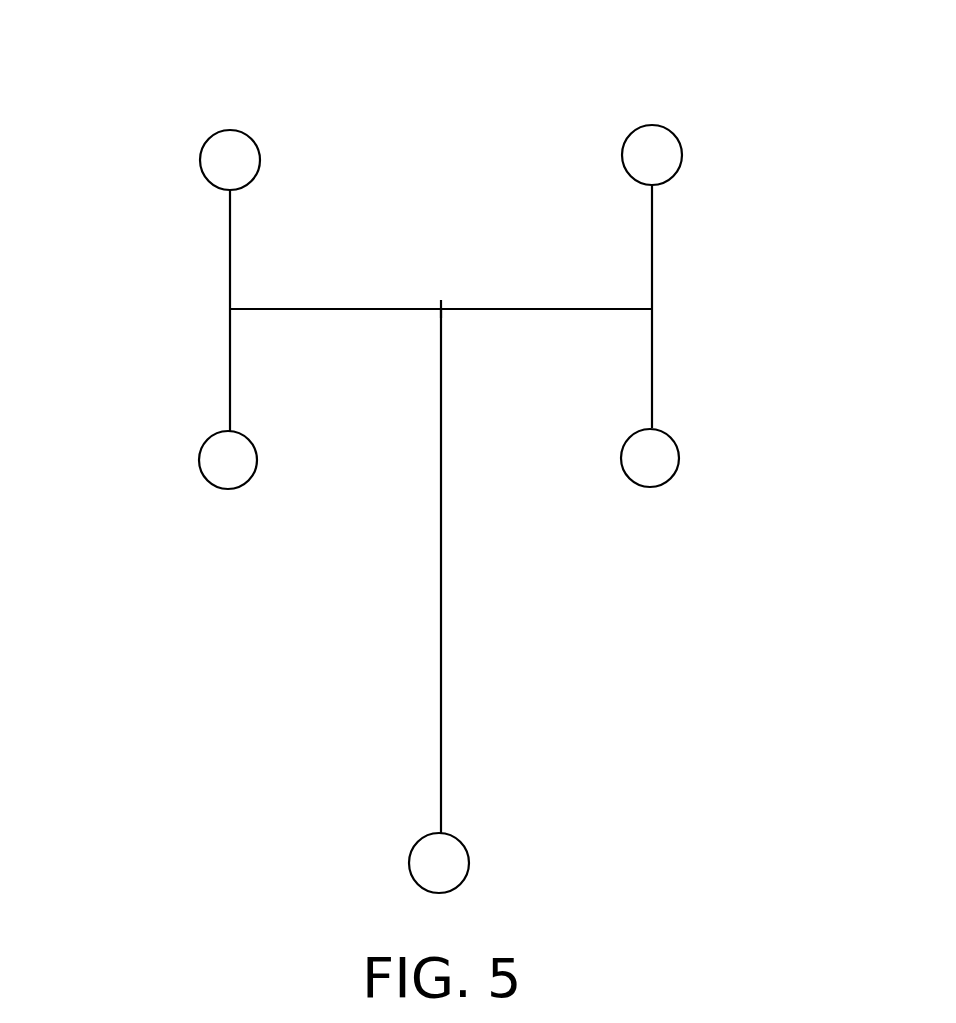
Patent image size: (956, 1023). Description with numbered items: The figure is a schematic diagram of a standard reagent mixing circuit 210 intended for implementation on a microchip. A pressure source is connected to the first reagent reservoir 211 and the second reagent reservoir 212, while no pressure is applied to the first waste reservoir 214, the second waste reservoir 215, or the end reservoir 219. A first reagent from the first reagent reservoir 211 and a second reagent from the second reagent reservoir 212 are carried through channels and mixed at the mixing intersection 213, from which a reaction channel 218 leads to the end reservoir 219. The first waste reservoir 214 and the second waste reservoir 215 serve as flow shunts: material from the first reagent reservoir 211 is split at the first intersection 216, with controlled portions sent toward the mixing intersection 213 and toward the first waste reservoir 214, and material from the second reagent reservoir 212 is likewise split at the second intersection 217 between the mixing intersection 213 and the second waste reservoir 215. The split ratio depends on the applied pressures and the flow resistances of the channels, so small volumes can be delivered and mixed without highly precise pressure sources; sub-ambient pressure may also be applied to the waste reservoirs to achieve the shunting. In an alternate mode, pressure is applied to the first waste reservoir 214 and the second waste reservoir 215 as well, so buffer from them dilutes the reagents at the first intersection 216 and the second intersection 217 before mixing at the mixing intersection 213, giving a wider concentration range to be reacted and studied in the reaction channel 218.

The reagent mixing circuit 210 is at (441, 118).
The R1 reservoir 211 is at (199, 161).
The R2 reservoir 212 is at (683, 165).
The T3 intersection 213 is at (450, 309).
The W1 reservoir 214 is at (198, 465).
The W2 reservoir 215 is at (682, 465).
The T1 intersection 216 is at (232, 309).
The T2 intersection 217 is at (650, 309).
The reaction channel 218 is at (441, 605).
The reservoir 219 is at (468, 872).